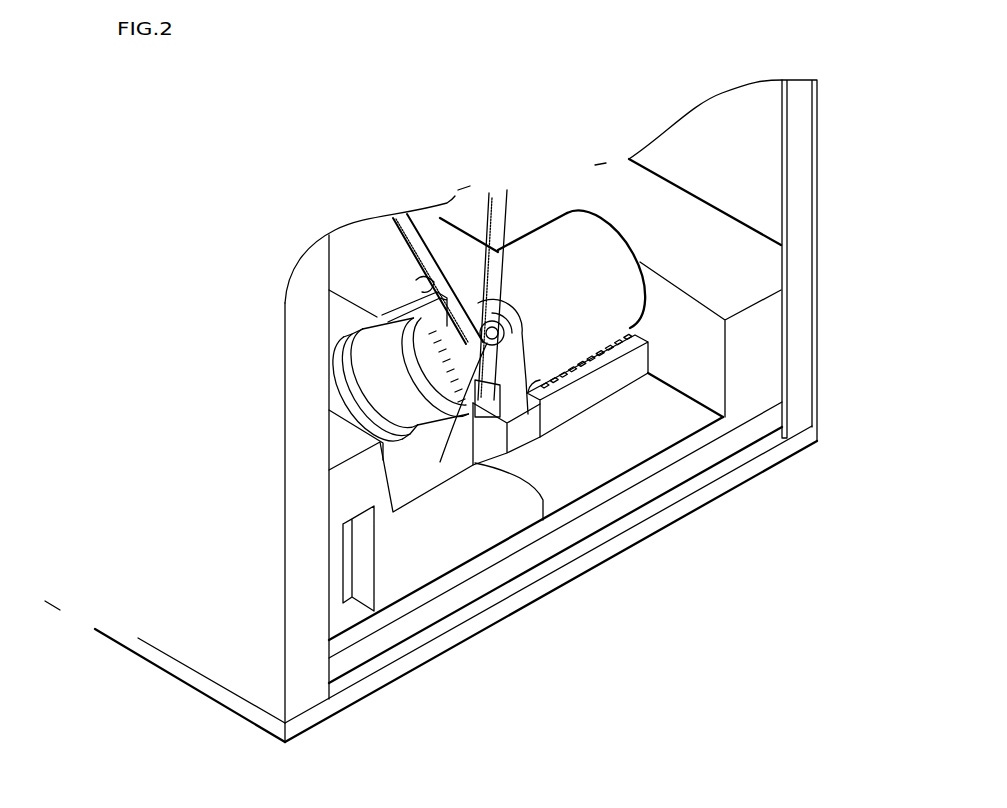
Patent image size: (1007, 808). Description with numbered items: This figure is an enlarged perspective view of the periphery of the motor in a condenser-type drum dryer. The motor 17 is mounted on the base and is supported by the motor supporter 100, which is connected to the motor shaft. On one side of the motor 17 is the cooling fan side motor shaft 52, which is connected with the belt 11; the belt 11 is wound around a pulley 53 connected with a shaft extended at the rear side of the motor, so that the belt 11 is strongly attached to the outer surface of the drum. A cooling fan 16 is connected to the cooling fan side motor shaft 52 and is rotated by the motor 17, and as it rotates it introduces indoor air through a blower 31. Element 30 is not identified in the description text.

The belt 11 is at (493, 287).
The cooling fan 16 is at (430, 420).
The motor 17 is at (608, 272).
The base plate 30 is at (450, 545).
The blower 31 is at (347, 391).
The cooling fan side motor shaft 52 is at (595, 322).
The pulley 53 is at (418, 282).
The motor supporter 100 is at (493, 263).